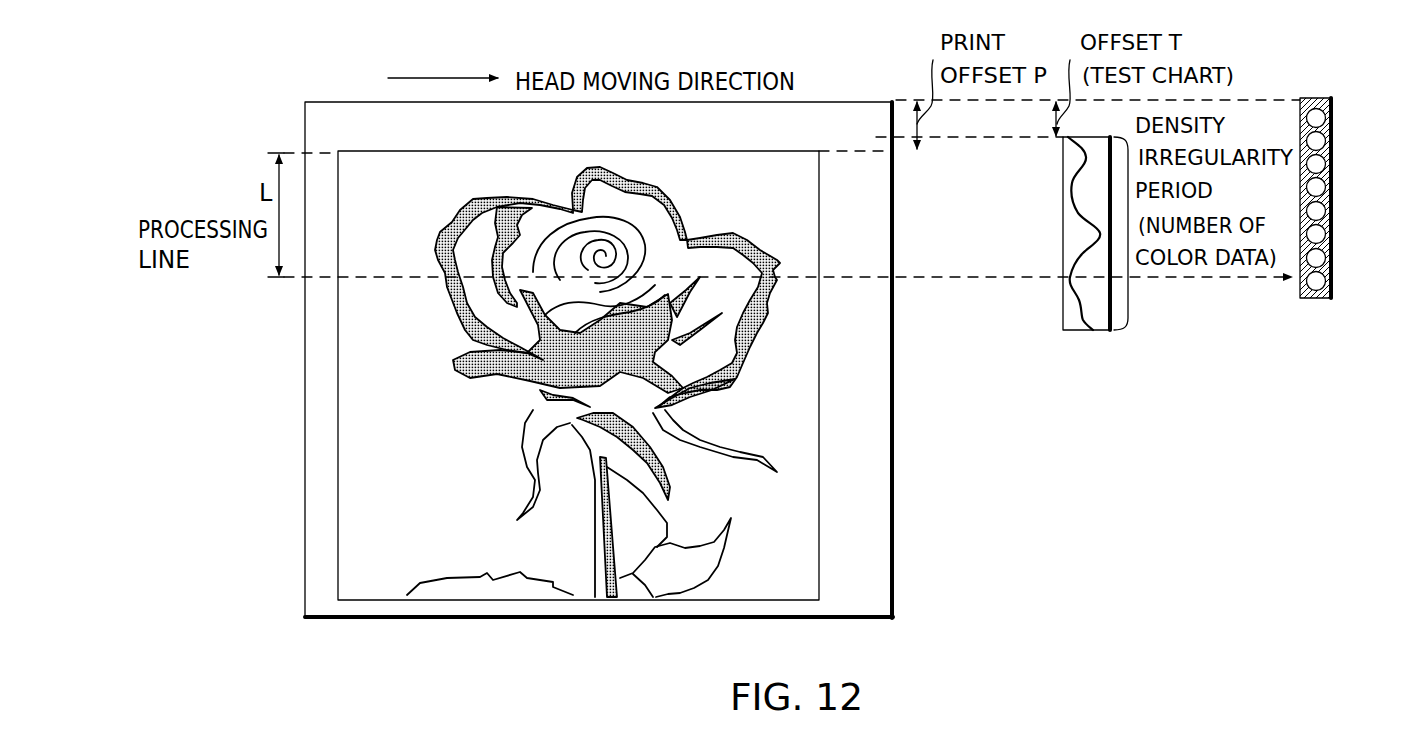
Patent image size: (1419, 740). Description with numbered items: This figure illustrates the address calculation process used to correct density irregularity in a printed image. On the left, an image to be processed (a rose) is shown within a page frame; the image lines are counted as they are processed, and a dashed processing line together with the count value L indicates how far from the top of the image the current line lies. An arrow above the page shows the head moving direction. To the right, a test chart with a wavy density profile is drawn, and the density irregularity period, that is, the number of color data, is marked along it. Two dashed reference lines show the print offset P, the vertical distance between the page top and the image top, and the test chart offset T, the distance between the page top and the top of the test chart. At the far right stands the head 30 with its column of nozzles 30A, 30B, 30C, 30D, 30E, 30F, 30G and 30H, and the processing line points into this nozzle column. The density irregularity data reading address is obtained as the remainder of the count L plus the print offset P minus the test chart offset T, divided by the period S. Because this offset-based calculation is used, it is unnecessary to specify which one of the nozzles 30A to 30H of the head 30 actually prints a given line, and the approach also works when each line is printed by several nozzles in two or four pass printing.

The head 30 is at (1330, 98).
The nozzle 30A is at (1326, 114).
The nozzle 30B is at (1326, 139).
The nozzle 30C is at (1326, 169).
The nozzle 30D is at (1326, 192).
The nozzle 30E is at (1326, 216).
The nozzle 30F is at (1326, 241).
The nozzle 30G is at (1326, 264).
The nozzle 30H is at (1326, 287).